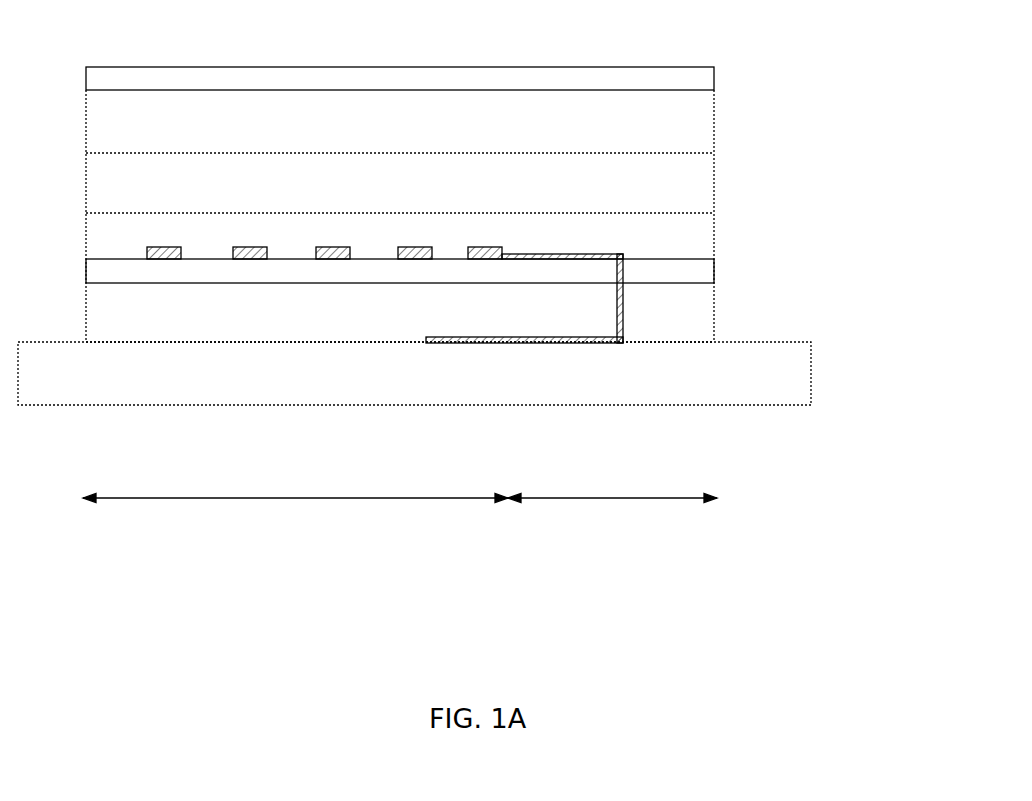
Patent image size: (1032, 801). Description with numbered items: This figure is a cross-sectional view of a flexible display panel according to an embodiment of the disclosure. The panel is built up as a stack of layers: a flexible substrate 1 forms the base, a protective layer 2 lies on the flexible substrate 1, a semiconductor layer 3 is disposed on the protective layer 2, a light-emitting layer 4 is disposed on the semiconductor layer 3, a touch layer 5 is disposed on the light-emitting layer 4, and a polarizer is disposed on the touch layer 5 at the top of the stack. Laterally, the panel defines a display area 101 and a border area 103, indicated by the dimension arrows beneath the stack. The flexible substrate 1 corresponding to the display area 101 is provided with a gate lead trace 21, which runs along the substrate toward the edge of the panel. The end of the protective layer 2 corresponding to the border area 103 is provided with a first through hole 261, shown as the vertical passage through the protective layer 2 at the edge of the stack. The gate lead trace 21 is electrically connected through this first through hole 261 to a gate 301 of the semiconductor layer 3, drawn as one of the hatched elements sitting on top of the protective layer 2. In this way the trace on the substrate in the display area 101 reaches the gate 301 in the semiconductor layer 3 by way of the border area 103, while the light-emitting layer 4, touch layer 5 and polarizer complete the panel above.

The flexible substrate 1 is at (742, 374).
The protective layer 2 is at (661, 319).
The semiconductor layer 3 is at (469, 152).
The light-emitting layer 4 is at (661, 197).
The touch layer 5 is at (661, 130).
The gate 301 is at (481, 247).
The gate lead trace 21 is at (512, 343).
The first through hole 261 is at (628, 312).
The display area 101 is at (295, 527).
The border area 103 is at (612, 527).
The element polarizer is at (715, 78).